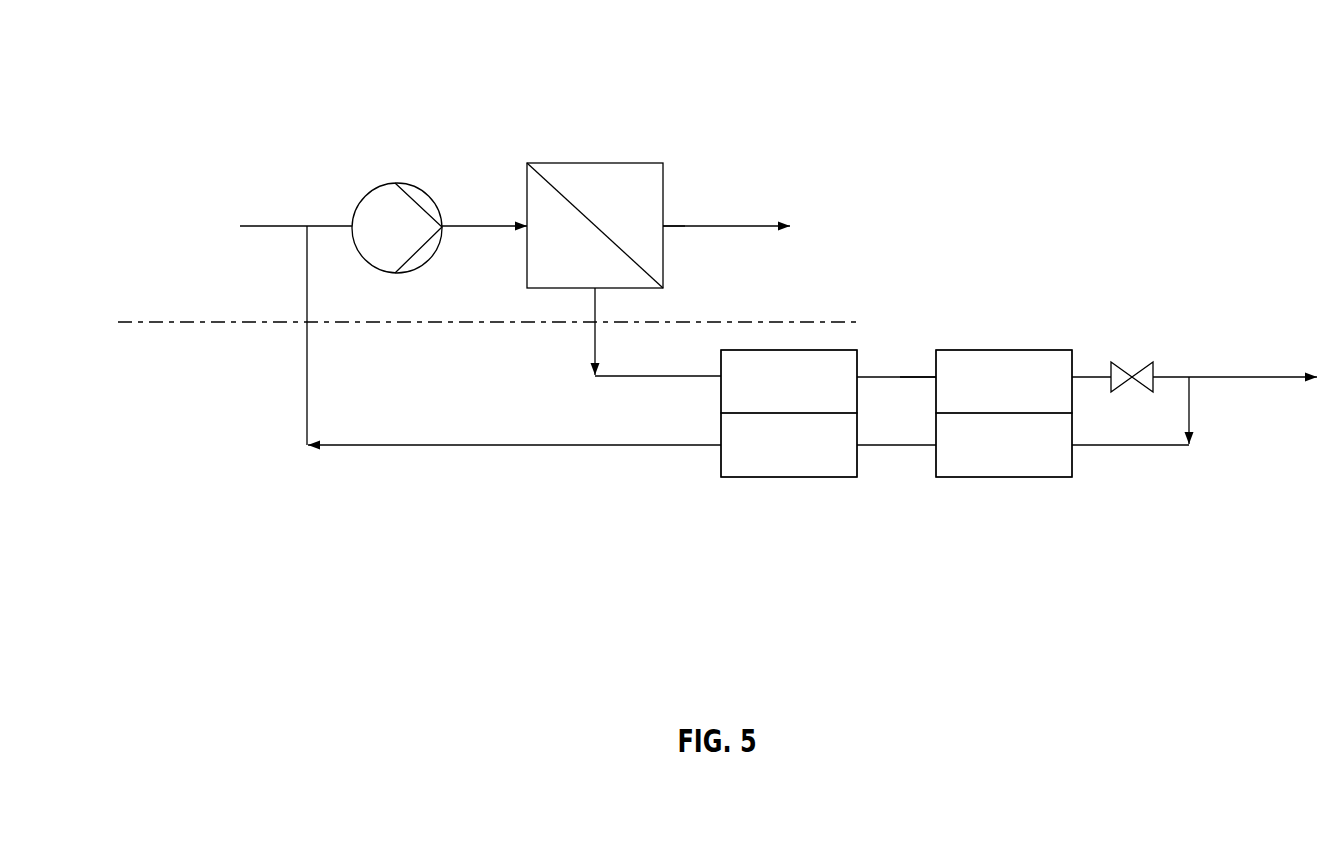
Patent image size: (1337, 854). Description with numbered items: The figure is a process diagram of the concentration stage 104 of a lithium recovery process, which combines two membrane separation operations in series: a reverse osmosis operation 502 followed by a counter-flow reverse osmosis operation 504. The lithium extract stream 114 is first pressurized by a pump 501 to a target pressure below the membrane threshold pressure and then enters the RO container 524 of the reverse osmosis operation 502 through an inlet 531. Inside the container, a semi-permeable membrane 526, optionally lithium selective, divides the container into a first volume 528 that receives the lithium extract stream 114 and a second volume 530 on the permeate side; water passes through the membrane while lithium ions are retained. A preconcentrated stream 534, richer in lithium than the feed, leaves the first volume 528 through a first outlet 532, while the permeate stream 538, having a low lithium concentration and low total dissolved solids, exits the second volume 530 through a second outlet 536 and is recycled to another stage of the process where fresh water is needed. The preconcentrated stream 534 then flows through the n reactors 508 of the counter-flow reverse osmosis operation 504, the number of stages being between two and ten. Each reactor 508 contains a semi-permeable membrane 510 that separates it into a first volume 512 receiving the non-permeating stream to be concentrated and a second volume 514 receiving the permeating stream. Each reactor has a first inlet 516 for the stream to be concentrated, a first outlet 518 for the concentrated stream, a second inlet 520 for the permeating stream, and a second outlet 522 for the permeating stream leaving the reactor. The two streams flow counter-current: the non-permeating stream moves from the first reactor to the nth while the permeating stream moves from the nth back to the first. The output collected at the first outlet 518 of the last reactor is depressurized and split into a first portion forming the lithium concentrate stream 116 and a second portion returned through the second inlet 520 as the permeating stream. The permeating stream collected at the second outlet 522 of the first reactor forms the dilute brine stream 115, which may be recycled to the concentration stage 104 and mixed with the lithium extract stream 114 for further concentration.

The concentration stage 104 is at (365, 631).
The lithium extract stream 114 is at (270, 226).
The dilute brine stream 115 is at (515, 446).
The lithium concentrate stream 116 is at (1245, 377).
The pump 501 is at (389, 180).
The reverse osmosis operation 502 is at (590, 173).
The counter-flow reverse osmosis operation 504 is at (185, 323).
The reactor 508 is at (886, 379).
The semi-permeable membrane 510 is at (787, 416).
The first volume 512 is at (773, 350).
The second volume 514 is at (742, 464).
The first inlet 516 is at (929, 366).
The first outlet 518 is at (1079, 366).
The second inlet 520 is at (1080, 453).
The second outlet 522 is at (918, 460).
The RO container 524 is at (648, 147).
The semi-permeable membrane 526 is at (569, 192).
The first volume 528 is at (554, 264).
The second volume 530 is at (644, 180).
The inlet 531 is at (523, 217).
The first outlet 532 is at (588, 298).
The preconcentrated stream 534 is at (653, 377).
The second outlet 536 is at (669, 233).
The permeate stream 538 is at (760, 224).